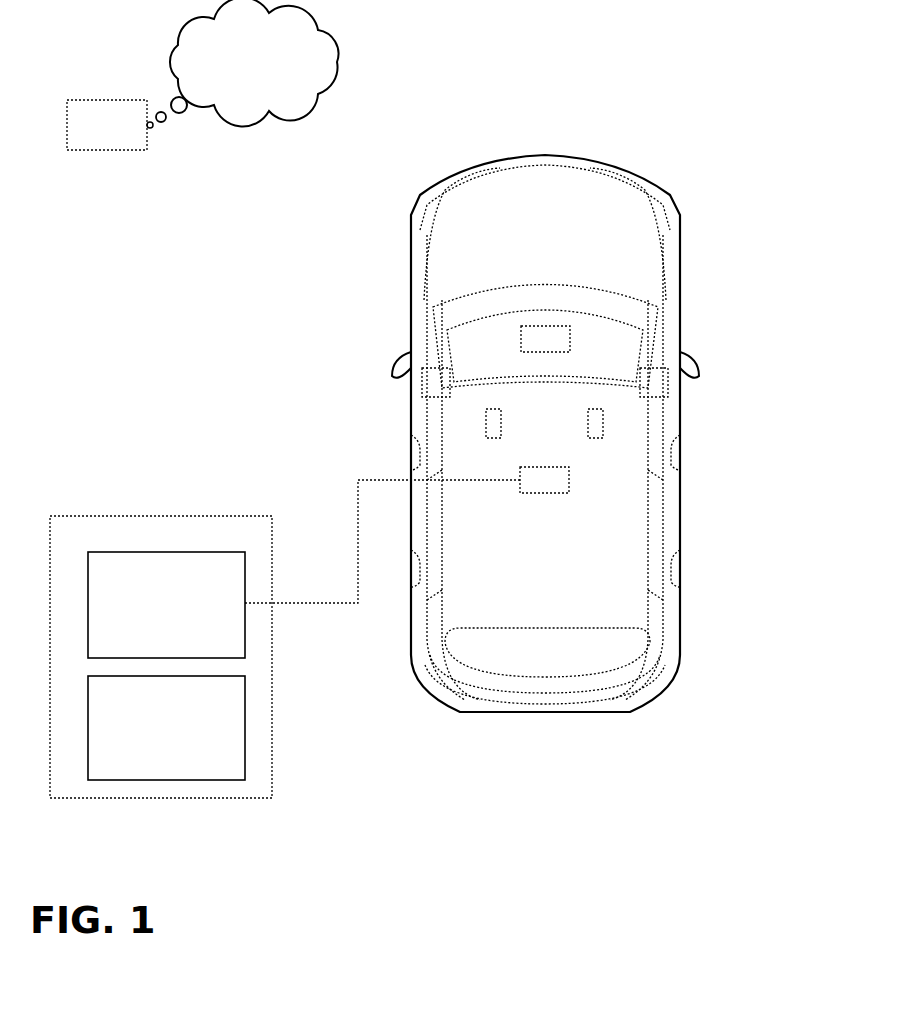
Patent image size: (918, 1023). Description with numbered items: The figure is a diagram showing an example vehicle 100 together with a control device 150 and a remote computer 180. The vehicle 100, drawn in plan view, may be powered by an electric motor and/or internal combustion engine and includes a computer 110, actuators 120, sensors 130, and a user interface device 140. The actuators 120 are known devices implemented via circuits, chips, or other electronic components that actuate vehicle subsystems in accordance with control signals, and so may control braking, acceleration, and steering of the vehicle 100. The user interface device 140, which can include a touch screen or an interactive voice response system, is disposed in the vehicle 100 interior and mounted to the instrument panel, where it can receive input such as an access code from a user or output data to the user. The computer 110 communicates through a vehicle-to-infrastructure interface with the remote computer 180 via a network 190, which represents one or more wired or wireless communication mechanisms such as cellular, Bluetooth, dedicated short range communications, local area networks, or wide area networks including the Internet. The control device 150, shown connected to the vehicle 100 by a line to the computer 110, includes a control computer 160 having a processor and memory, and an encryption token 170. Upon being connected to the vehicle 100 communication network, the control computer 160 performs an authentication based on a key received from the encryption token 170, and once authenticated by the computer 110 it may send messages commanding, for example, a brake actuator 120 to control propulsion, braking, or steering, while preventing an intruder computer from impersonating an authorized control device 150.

The vehicle 100 is at (545, 433).
The computer 110 is at (543, 495).
The actuators 120 is at (485, 412).
The sensors 130 is at (605, 417).
The user interface device 140 is at (572, 330).
The control device 150 is at (162, 516).
The control computer 160 is at (166, 605).
The encryption token 170 is at (166, 728).
The remote computer 180 is at (107, 125).
The network 190 is at (242, 64).